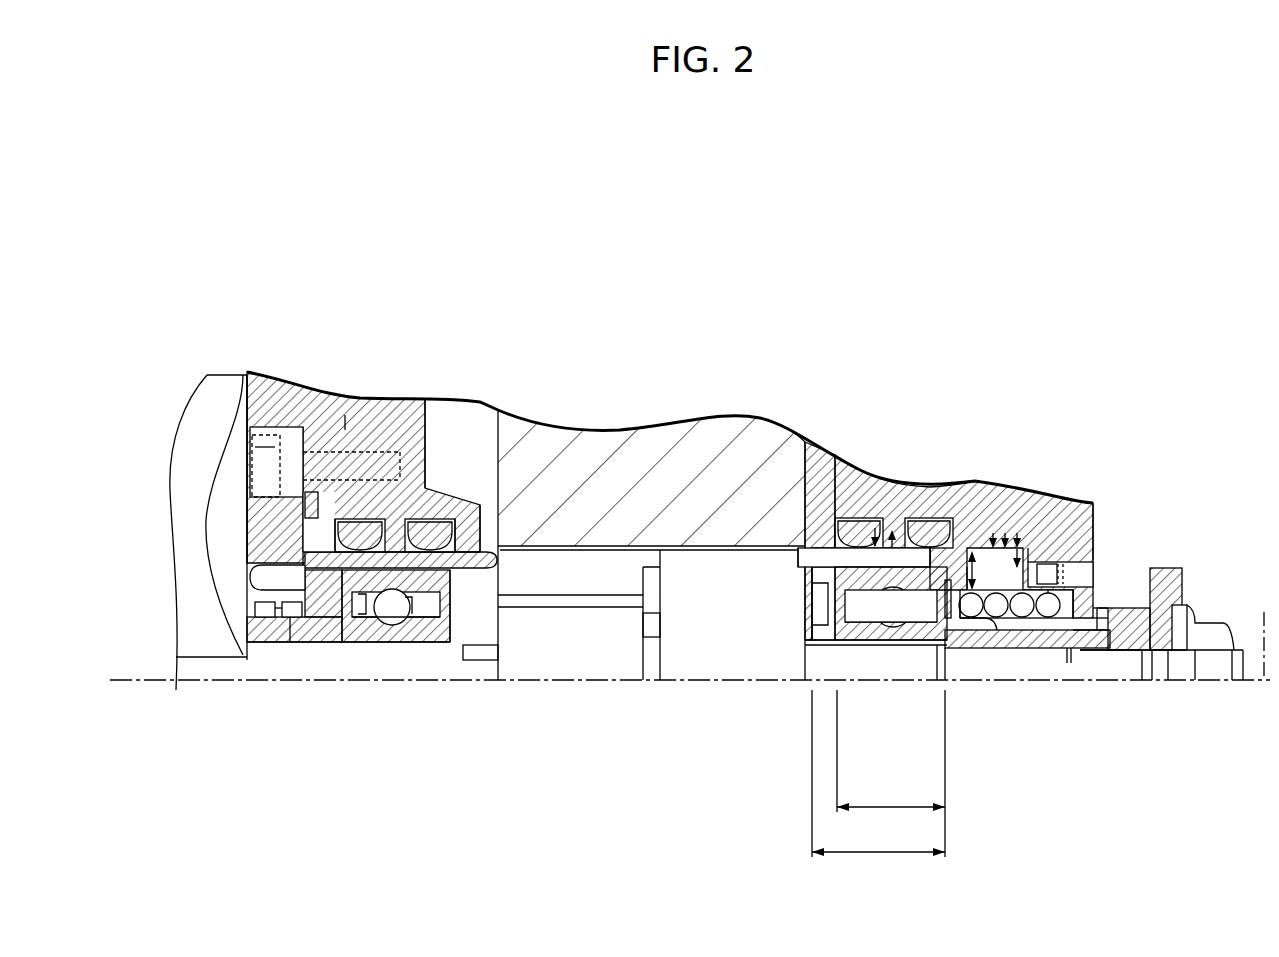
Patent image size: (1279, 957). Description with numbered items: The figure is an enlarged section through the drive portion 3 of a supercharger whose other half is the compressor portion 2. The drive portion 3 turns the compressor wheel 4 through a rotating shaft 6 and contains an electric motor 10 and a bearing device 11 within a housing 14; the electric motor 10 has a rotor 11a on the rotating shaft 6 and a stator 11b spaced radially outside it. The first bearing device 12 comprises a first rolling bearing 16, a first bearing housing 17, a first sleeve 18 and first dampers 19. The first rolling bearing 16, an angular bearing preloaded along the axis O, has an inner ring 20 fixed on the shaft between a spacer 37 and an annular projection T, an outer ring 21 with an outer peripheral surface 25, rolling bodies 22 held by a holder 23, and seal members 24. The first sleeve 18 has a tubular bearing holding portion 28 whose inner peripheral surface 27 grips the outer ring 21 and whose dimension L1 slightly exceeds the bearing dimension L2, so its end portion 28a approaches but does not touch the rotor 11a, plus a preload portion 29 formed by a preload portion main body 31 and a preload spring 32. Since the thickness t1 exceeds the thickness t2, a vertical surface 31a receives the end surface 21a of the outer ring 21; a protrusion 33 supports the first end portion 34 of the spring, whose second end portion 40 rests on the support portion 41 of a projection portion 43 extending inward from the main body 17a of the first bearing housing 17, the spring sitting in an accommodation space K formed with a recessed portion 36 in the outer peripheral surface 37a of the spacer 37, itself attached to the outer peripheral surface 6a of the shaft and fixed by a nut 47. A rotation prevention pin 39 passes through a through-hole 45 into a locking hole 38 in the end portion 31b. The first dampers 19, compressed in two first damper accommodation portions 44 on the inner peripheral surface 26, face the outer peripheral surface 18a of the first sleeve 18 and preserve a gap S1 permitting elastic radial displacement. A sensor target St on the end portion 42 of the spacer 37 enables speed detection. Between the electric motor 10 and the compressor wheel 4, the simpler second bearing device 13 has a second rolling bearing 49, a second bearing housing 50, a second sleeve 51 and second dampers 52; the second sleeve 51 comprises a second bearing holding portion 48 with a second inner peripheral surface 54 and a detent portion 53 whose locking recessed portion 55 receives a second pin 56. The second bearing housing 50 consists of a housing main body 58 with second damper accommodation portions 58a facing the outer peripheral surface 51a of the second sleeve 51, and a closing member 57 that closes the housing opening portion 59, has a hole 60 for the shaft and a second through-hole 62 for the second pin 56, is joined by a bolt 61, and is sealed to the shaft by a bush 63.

The compressor portion 2 is at (184, 514).
The drive portion 3 is at (764, 242).
The compressor wheel 4 is at (205, 408).
The rotating shaft 6 is at (1018, 648).
The outer peripheral surface 6a is at (1150, 660).
The electric motor 10 is at (589, 433).
The bearing device 11 is at (541, 514).
The rotor 11a is at (570, 650).
The stator 11b is at (650, 440).
The first bearing device 12 is at (836, 446).
The second bearing device 13 is at (268, 376).
The housing 14 is at (418, 402).
The first rolling bearing 16 is at (897, 645).
The first bearing housing 17 is at (1072, 485).
The main body 17a is at (1052, 505).
The first sleeve 18 is at (1010, 548).
The outer peripheral surface 18a is at (836, 560).
The first damper 19 is at (862, 520).
The inner ring 20 is at (376, 642).
The outer ring 21 is at (470, 590).
The end surface 21a is at (972, 560).
The rolling body 22 is at (393, 625).
The holder 23 is at (360, 630).
The seal member 24 is at (358, 605).
The outer peripheral surface 25 is at (330, 600).
The inner peripheral surface 26 is at (805, 590).
The inner peripheral surface 27 is at (815, 585).
The bearing holding portion 28 is at (878, 572).
The end portion 28a is at (800, 560).
The preload portion 29 is at (1028, 557).
The preload portion main body 31 is at (1035, 620).
The vertical surface 31a is at (962, 612).
The end portion 31b is at (1075, 600).
The preload spring 32 is at (1052, 618).
The protrusion 33 is at (1000, 632).
The first end portion 34 is at (984, 630).
The recessed portion 36 is at (1130, 652).
The spacer 37 is at (1115, 652).
The outer peripheral surface 37a is at (1170, 662).
The locking hole 38 is at (1094, 578).
The rotation prevention pin 39 is at (1095, 615).
The second end portion 40 is at (1092, 632).
The support portion 41 is at (1100, 622).
The end portion 42 is at (1205, 664).
The projection portion 43 is at (1157, 612).
The first damper accommodation portion 44 is at (835, 550).
The through-hole 45 is at (1082, 625).
The nut 47 is at (1218, 633).
The second bearing holding portion 48 is at (447, 598).
The second rolling bearing 49 is at (412, 620).
The second bearing housing 50 is at (345, 415).
The second sleeve 51 is at (490, 568).
The outer peripheral surface 51a is at (303, 530).
The second damper 52 is at (362, 521).
The detent portion 53 is at (305, 548).
The second inner peripheral surface 54 is at (484, 552).
The locking recessed portion 55 is at (291, 622).
The second pin 56 is at (325, 598).
The closing member 57 is at (258, 505).
The housing main body 58 is at (362, 519).
The second damper accommodation portion 58a is at (336, 535).
The housing opening portion 59 is at (270, 447).
The hole 60 is at (280, 642).
The bolt 61 is at (297, 427).
The second through-hole 62 is at (256, 578).
The bush 63 is at (262, 632).
The accommodation space K is at (1080, 652).
The dimension L1 is at (878, 788).
The dimension L2 is at (891, 773).
The axis O is at (1265, 631).
The gap S1 is at (1085, 562).
The sensor target St is at (1182, 592).
The annular projection T is at (822, 610).
The thickness t1 is at (975, 560).
The thickness t2 is at (892, 528).